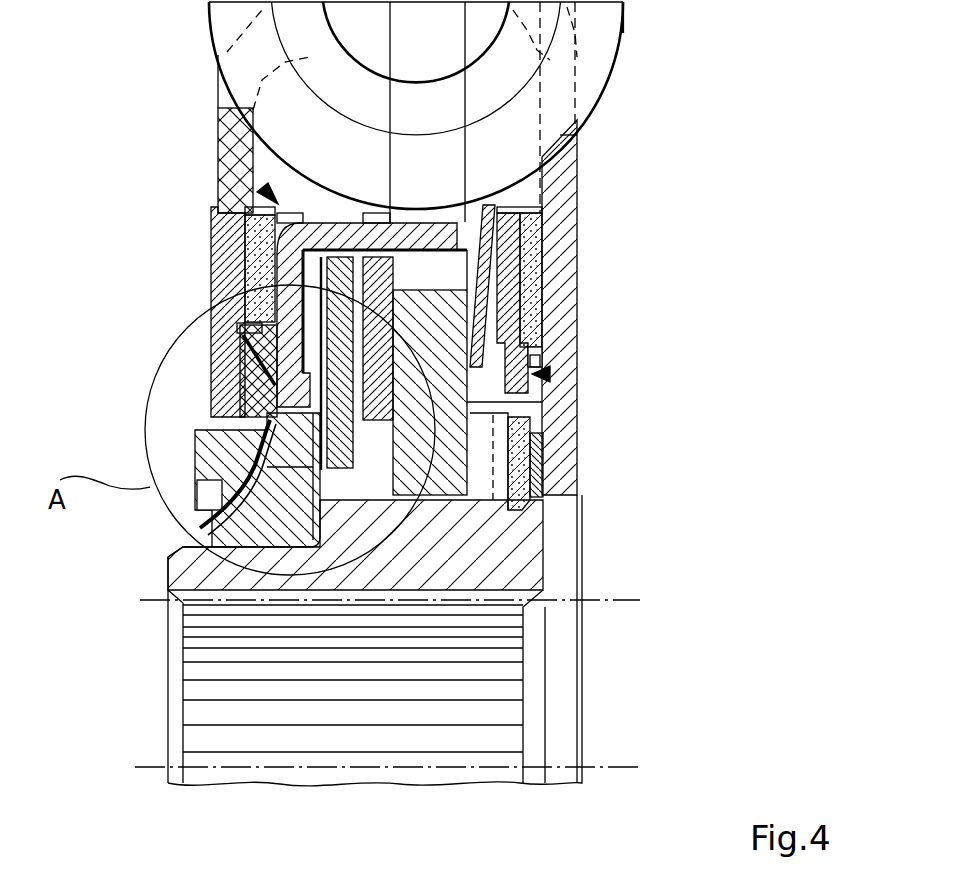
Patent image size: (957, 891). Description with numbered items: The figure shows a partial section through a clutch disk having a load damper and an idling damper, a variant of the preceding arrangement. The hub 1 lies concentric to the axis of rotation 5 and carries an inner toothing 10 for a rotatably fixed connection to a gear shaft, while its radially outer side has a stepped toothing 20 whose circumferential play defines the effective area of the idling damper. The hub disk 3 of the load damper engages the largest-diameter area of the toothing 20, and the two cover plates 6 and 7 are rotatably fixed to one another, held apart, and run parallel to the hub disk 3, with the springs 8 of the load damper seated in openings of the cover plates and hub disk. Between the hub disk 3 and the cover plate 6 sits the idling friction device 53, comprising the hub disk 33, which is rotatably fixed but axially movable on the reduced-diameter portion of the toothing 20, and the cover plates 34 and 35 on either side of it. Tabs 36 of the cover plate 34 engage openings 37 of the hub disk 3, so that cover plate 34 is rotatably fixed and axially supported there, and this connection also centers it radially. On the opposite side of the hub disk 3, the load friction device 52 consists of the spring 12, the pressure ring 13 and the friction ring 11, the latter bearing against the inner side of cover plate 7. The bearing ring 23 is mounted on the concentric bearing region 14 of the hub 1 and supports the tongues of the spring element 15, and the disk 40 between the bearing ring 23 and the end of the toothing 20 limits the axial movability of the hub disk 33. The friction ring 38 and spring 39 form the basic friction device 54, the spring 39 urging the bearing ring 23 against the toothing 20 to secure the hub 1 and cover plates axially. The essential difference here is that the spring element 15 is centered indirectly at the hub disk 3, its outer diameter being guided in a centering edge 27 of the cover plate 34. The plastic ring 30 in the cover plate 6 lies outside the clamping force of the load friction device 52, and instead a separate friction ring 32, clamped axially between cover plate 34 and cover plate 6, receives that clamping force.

The hub 1 is at (532, 544).
The hub disk 3 is at (458, 410).
The axis of rotation 5 is at (625, 767).
The cover plate 6 is at (218, 103).
The cover plate 7 is at (567, 167).
The springs 8 is at (545, 15).
The inner toothing 10 is at (505, 607).
The friction ring 11 is at (540, 272).
The spring 12 is at (550, 220).
The pressure ring 13 is at (540, 357).
The bearing region 14 is at (213, 557).
The spring element 15 is at (195, 517).
The toothing 20 is at (200, 457).
The bearing ring 23 is at (207, 363).
The centering edge 27 is at (225, 315).
The plastic ring 30 is at (210, 442).
The friction ring 32 is at (240, 190).
The hub disk 33 is at (280, 252).
The cover plate 34 is at (245, 222).
The cover plate 35 is at (490, 330).
The tabs 36 is at (222, 138).
The openings 37 is at (445, 258).
The friction ring 38 is at (510, 425).
The spring 39 is at (535, 468).
The disk 40 is at (207, 393).
The load friction device 52 is at (550, 377).
The idling friction device 53 is at (268, 196).
The basic friction device 54 is at (672, 412).